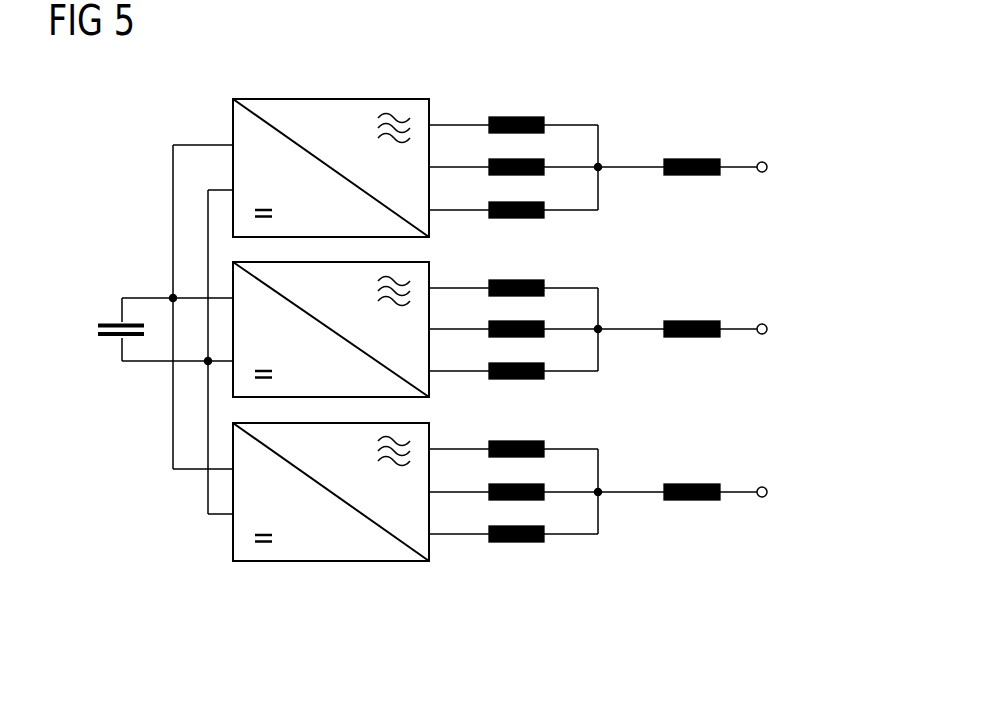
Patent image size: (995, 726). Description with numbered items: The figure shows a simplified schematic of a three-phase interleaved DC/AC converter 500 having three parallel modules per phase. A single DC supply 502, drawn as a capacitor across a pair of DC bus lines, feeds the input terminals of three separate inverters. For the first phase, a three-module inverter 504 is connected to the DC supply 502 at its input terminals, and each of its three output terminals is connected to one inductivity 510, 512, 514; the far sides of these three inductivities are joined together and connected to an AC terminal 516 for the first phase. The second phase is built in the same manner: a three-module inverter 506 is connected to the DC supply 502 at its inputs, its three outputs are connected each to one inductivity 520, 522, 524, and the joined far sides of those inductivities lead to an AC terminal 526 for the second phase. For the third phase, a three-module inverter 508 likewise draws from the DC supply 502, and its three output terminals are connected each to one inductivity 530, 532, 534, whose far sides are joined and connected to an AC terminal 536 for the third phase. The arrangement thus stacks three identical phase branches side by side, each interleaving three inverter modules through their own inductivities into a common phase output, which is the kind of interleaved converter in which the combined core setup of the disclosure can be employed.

The three-phase interleaved DC/AC converter 500 is at (674, 84).
The DC supply 502 is at (108, 324).
The three-module inverter 504 is at (323, 99).
The three-module inverter 506 is at (233, 384).
The three-module inverter 508 is at (323, 561).
The inductivity 510 is at (513, 117).
The inductivity 512 is at (532, 159).
The inductivity 514 is at (532, 202).
The AC terminal 516 is at (768, 167).
The inductivity 520 is at (533, 280).
The inductivity 522 is at (532, 321).
The inductivity 524 is at (532, 363).
The AC terminal 526 is at (768, 329).
The inductivity 530 is at (533, 441).
The inductivity 532 is at (532, 484).
The inductivity 534 is at (532, 527).
The AC terminal 536 is at (768, 492).